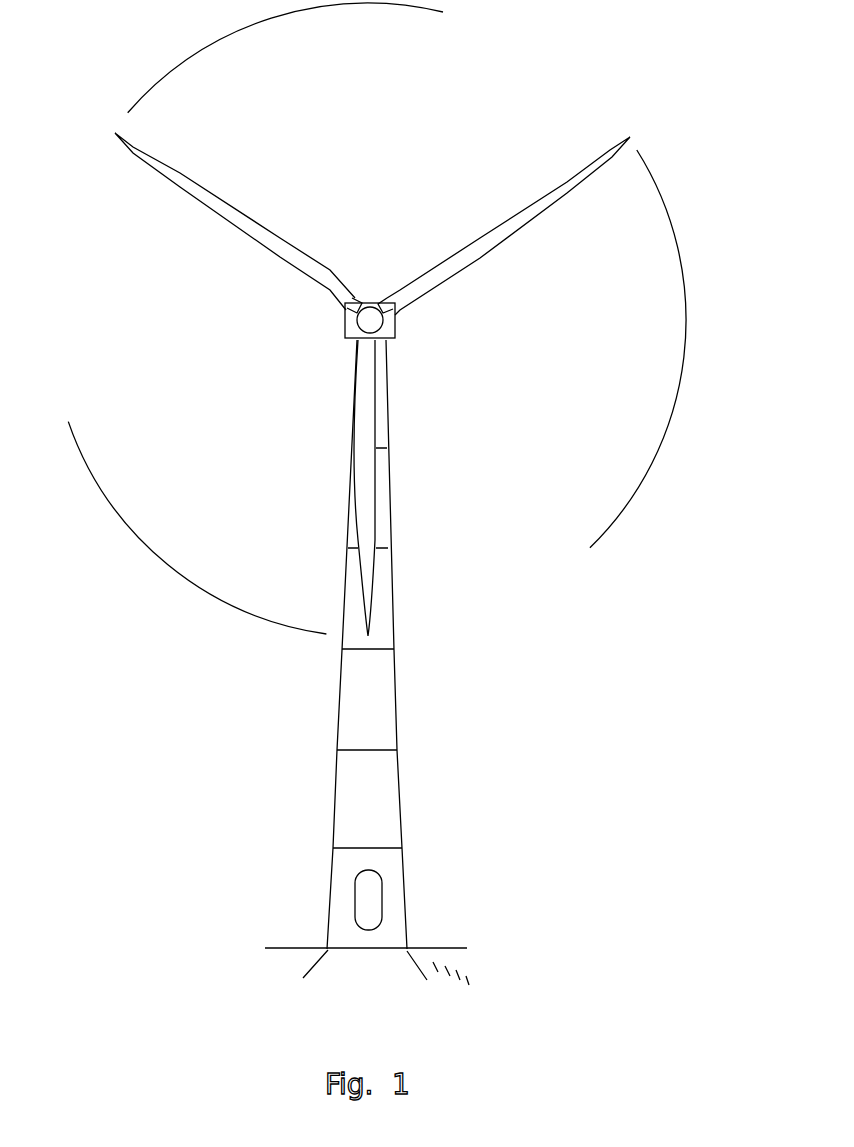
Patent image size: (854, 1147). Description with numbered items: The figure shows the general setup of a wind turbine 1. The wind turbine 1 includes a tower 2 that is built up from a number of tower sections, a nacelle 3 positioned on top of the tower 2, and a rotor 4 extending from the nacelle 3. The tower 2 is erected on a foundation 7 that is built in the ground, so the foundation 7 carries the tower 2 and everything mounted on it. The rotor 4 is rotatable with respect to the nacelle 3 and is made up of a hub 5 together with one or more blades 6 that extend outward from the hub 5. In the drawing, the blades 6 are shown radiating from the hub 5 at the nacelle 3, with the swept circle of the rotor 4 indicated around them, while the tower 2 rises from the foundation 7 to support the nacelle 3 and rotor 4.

The wind turbine 1 is at (127, 719).
The tower 2 is at (383, 810).
The nacelle 3 is at (392, 330).
The rotor 4 is at (625, 510).
The hub 5 is at (370, 320).
The blades 6 is at (480, 240).
The foundation 7 is at (328, 960).